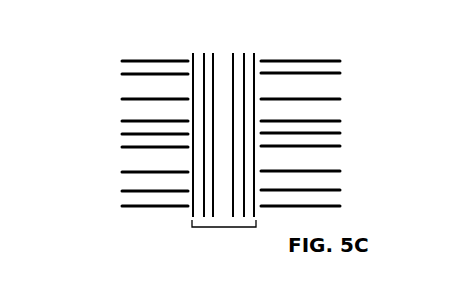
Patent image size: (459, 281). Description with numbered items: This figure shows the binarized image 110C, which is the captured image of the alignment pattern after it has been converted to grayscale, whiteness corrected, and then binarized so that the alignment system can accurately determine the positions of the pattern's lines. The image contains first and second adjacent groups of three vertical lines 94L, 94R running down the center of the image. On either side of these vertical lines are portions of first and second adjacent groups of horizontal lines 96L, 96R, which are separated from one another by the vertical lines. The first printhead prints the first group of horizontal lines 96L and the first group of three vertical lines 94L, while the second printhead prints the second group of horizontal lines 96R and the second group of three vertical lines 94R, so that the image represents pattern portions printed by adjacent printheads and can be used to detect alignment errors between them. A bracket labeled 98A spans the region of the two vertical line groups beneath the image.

The binarized image 110C is at (208, 133).
The first group of horizontal lines 96L is at (157, 53).
The second group of horizontal lines 96R is at (320, 51).
The first group of three vertical lines 94L is at (203, 49).
The second group of three vertical lines 94R is at (244, 49).
The gap region 98A is at (229, 230).